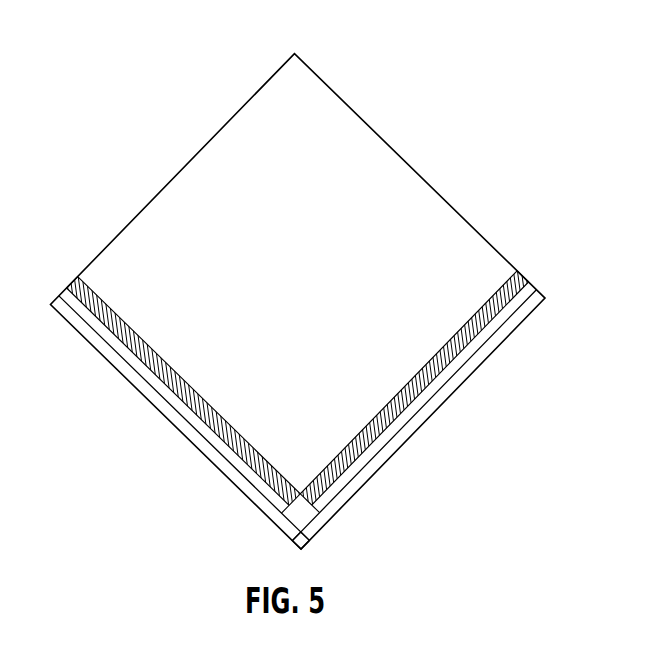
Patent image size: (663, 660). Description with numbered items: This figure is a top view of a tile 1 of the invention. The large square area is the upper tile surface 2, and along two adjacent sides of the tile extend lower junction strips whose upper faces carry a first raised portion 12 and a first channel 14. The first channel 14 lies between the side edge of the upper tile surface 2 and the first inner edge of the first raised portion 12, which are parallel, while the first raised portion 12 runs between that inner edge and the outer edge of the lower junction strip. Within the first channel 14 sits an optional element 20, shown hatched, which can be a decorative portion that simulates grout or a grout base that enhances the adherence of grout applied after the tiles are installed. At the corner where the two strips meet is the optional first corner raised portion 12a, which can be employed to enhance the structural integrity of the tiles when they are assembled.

The tile 1 is at (291, 266).
The upper tile surface 2 is at (398, 193).
The first raised portion 12 is at (127, 378).
The first corner raised portion 12a is at (310, 541).
The first channel 14 is at (77, 281).
The optional element 20 is at (100, 313).